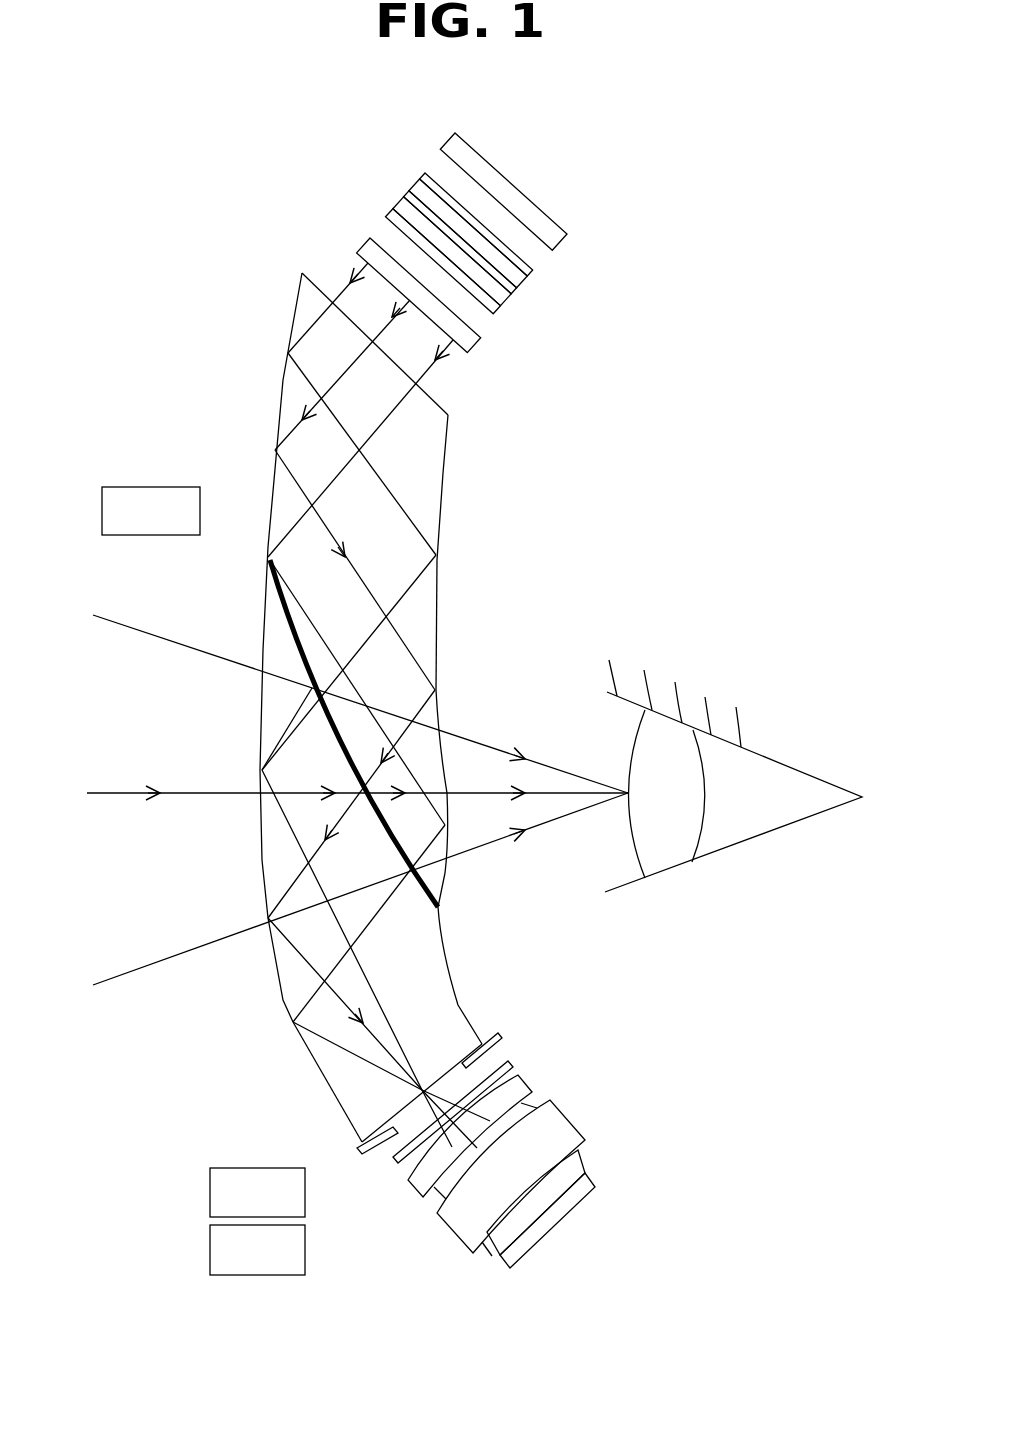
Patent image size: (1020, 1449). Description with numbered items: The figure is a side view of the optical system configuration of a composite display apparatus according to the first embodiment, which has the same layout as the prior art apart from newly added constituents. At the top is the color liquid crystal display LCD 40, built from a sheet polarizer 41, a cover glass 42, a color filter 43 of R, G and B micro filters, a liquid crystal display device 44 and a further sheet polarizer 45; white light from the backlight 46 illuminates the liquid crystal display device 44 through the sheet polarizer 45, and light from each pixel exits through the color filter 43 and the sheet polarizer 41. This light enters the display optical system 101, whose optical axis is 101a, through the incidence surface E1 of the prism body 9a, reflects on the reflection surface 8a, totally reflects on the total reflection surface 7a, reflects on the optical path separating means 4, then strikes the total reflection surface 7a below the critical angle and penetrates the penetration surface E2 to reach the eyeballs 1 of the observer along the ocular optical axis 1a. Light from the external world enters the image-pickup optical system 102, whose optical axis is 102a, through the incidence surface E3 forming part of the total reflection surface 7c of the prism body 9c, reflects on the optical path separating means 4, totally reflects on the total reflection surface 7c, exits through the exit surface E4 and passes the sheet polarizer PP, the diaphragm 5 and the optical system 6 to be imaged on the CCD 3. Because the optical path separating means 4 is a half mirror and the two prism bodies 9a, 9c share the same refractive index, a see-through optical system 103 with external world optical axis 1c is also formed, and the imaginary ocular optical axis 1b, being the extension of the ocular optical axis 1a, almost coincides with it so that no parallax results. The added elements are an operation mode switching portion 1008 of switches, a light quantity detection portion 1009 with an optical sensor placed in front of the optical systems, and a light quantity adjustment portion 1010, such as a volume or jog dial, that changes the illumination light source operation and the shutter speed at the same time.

The eyeballs 1 is at (797, 822).
The ocular optical axis 1a is at (553, 797).
The imaginary ocular optical axis 1b is at (210, 790).
The external world optical axis 1c is at (105, 797).
The CCD 3 is at (520, 1258).
The optical path separating means 4 is at (298, 645).
The diaphragm 5 is at (368, 1157).
The optical system 6 is at (608, 1132).
The total reflection surface 7a is at (436, 612).
The total reflection surface 7c is at (274, 976).
The reflection surface 8a is at (277, 410).
The prism body 9a is at (432, 477).
The prism body 9c is at (325, 1088).
The color liquid crystal display LCD 40 is at (406, 74).
The sheet polarizer 41 is at (388, 213).
The cover glass 42 is at (396, 204).
The color filter 43 is at (403, 196).
The liquid crystal display device 44 is at (412, 187).
The sheet polarizer 45 is at (425, 173).
The backlight 46 is at (553, 232).
The display optical system 101 is at (172, 463).
The optical axis 101a is at (293, 322).
The image-pickup optical system 102 is at (200, 1088).
The optical axis 102a is at (266, 885).
The see-through optical system 103 is at (132, 716).
The operation mode switching portion 1008 is at (210, 1205).
The light quantity detection portion 1009 is at (102, 522).
The light quantity adjustment portion 1010 is at (210, 1262).
The incidence surface E1 is at (440, 405).
The penetration surface E2 is at (447, 757).
The incidence surface E3 is at (260, 825).
The exit surface E4 is at (503, 1056).
The sheet polarizer PP is at (513, 1063).